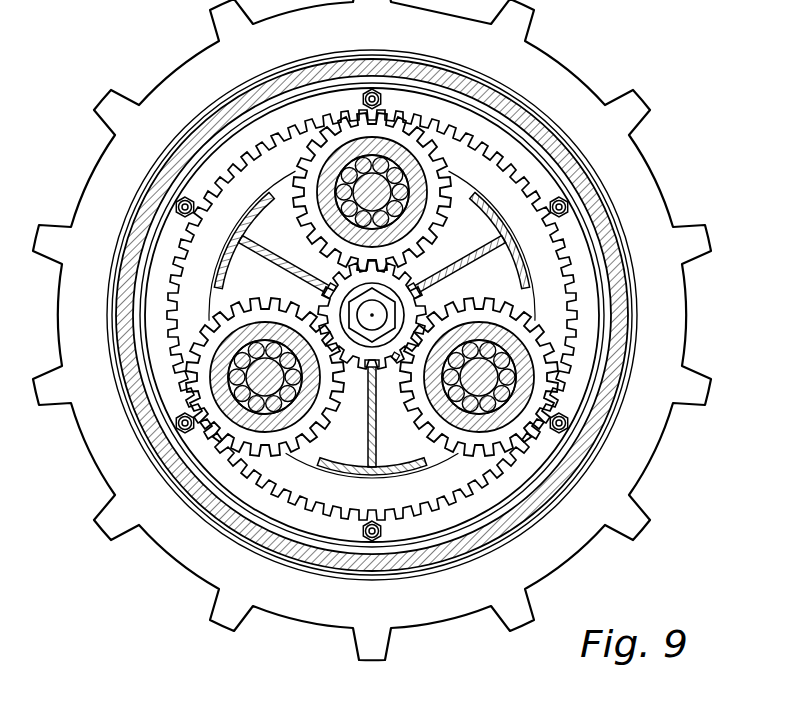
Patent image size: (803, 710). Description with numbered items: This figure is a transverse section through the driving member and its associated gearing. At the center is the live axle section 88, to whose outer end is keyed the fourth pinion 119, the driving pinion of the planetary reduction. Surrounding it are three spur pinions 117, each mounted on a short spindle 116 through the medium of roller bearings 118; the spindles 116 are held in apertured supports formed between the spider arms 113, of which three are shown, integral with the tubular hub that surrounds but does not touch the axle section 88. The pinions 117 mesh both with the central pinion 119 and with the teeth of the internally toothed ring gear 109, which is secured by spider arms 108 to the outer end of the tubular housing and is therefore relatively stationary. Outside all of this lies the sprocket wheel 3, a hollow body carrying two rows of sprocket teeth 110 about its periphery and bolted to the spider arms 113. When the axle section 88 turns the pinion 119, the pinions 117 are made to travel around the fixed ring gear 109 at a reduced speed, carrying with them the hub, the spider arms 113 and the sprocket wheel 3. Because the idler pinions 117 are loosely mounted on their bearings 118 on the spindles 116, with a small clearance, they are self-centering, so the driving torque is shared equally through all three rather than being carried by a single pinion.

The sprocket wheel 3 is at (530, 117).
The live axle section 88 is at (386, 317).
The spider arms 108 is at (607, 337).
The internally toothed ring gear 109 is at (547, 183).
The sprocket teeth 110 is at (100, 107).
The spider arms 113 is at (270, 262).
The spindles 116 is at (421, 181).
The spur pinion 117 is at (440, 226).
The roller bearings 118 is at (326, 216).
The fourth pinion 119 is at (323, 294).